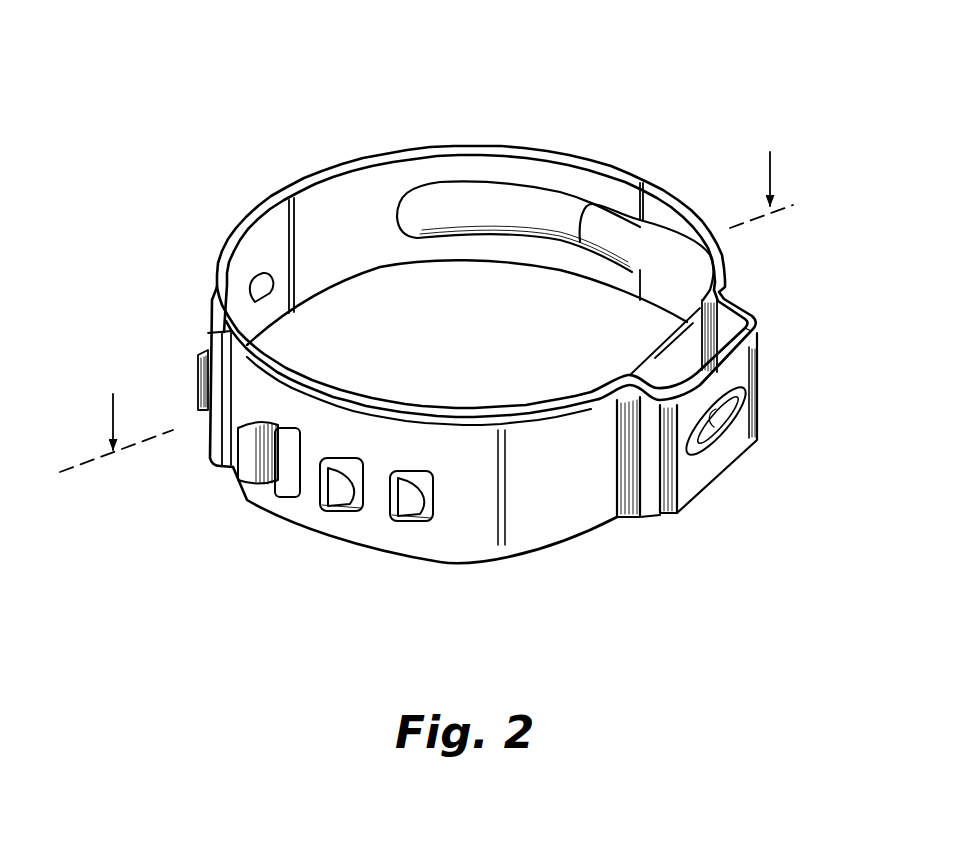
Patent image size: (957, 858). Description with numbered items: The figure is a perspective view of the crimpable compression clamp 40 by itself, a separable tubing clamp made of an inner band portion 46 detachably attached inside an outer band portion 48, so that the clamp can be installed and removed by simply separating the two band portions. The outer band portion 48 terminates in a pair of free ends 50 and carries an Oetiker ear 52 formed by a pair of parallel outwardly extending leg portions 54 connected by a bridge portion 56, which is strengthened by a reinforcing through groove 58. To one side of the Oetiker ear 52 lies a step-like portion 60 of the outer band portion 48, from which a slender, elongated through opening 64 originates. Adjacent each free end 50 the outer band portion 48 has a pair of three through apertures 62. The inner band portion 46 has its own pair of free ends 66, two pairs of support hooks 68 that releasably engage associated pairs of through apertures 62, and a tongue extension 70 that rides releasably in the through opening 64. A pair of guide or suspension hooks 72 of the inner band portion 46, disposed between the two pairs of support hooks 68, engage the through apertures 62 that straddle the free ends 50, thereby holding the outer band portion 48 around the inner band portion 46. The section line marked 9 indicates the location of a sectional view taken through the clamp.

The crimpable compression clamp 40 is at (268, 95).
The inner band portion 46 is at (597, 384).
The outer band portion 48 is at (262, 198).
The pair of free ends of outer band portion 50 is at (207, 333).
The Oetiker ear 52 is at (690, 480).
The pair of parallel outwardly extending leg portions 54 is at (753, 312).
The bridge portion 56 is at (745, 365).
The reinforcing through groove 58 is at (712, 422).
The step-like portion 60 is at (651, 180).
The pair of three through apertures 62 is at (292, 440).
The through opening 64 is at (524, 192).
The pair of free ends of inner band portion 66 is at (300, 243).
The support hooks 68 is at (333, 488).
The tongue extension 70 is at (600, 232).
The guide or suspension hooks 72 is at (196, 416).
The section line 9- 9 is at (426, 293).